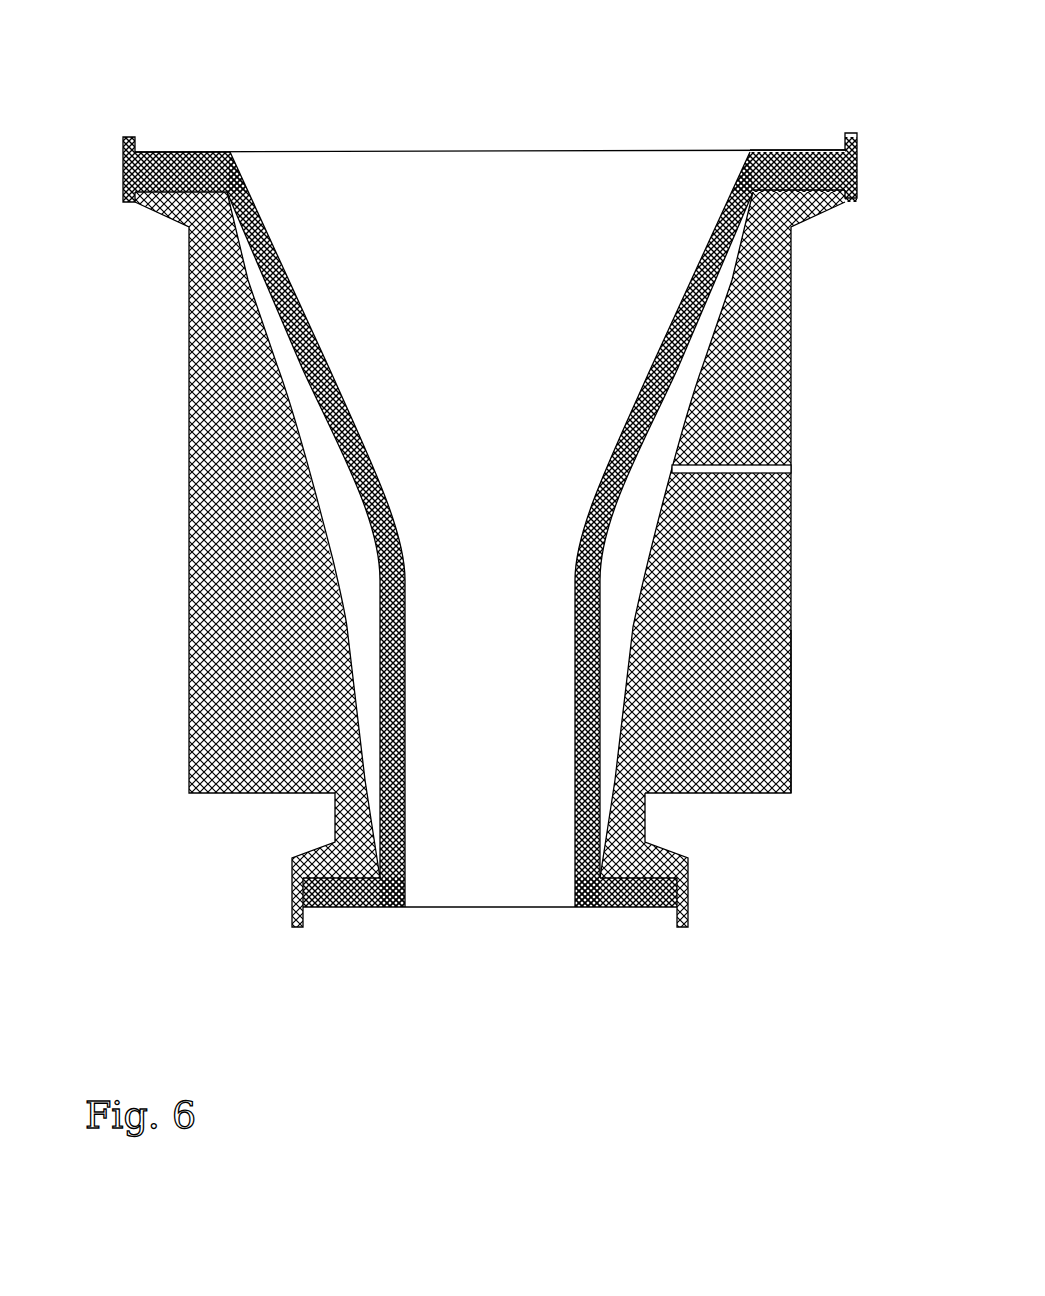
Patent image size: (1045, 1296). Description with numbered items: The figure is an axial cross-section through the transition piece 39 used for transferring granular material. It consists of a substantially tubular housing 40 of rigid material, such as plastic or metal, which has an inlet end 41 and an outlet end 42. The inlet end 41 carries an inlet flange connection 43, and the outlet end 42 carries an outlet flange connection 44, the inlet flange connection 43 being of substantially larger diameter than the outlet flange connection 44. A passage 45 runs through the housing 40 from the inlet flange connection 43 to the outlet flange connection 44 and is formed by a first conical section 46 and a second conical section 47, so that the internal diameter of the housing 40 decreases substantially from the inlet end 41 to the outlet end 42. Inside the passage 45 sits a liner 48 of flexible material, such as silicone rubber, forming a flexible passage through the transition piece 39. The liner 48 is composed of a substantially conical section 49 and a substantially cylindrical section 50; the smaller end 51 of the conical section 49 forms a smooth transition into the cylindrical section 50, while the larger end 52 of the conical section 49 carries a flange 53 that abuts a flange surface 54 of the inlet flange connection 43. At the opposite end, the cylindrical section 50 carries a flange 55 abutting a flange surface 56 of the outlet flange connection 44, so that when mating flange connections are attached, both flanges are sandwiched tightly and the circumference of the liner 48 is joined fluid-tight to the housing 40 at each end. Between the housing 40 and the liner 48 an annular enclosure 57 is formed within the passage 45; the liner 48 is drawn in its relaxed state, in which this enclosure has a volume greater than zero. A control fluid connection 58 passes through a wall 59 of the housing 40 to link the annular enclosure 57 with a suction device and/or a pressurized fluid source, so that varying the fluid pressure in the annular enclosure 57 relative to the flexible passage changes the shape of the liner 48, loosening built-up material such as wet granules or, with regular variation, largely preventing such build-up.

The transition piece 39 is at (138, 699).
The housing 40 is at (791, 592).
The inlet end 41 is at (194, 114).
The outlet end 42 is at (584, 955).
The inlet flange connection 43 is at (855, 179).
The outlet flange connection 44 is at (692, 893).
The passage 45 is at (528, 291).
The first conical section 46 is at (300, 430).
The second conical section 47 is at (350, 650).
The liner 48 is at (304, 331).
The conical section 49 is at (355, 410).
The cylindrical section 50 is at (402, 735).
The smaller end 51 is at (392, 492).
The larger end 52 is at (745, 157).
The flange 53 is at (197, 155).
The flange surface 54 is at (130, 198).
The flange 55 is at (368, 908).
The flange surface 56 is at (335, 908).
The annular enclosure 57 is at (620, 547).
The control fluid connection 58 is at (755, 470).
The wall 59 is at (765, 698).